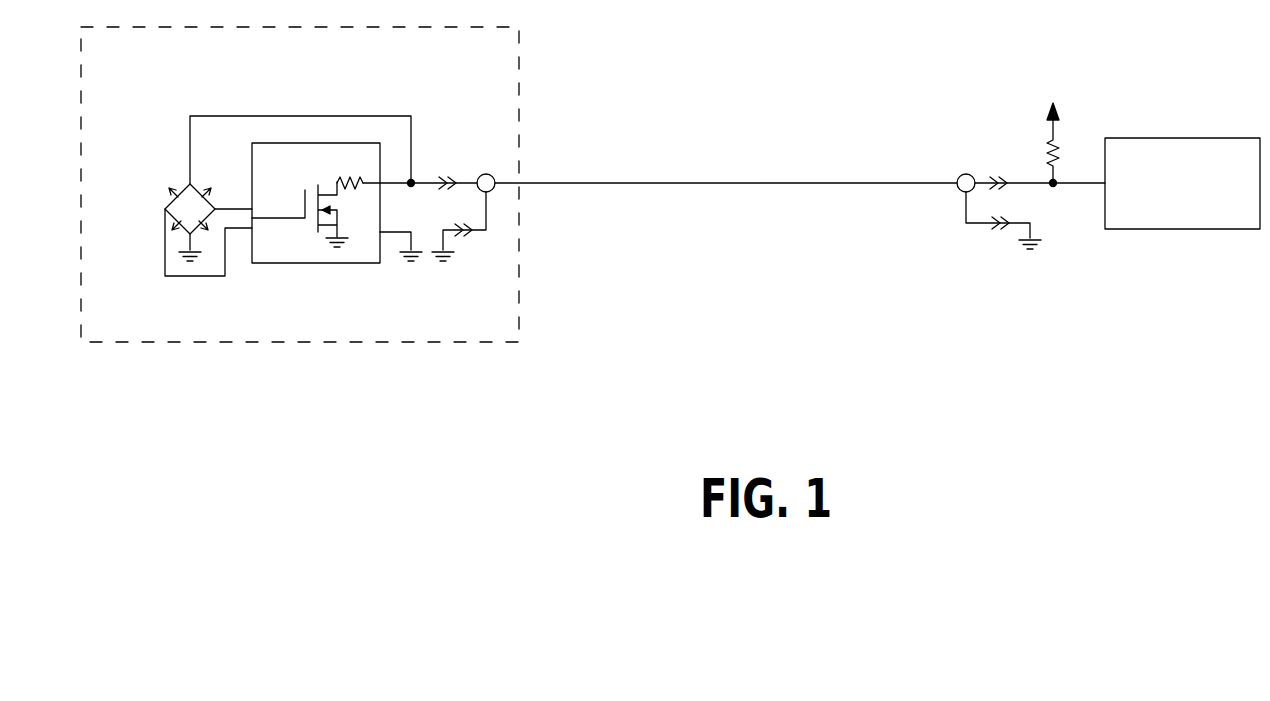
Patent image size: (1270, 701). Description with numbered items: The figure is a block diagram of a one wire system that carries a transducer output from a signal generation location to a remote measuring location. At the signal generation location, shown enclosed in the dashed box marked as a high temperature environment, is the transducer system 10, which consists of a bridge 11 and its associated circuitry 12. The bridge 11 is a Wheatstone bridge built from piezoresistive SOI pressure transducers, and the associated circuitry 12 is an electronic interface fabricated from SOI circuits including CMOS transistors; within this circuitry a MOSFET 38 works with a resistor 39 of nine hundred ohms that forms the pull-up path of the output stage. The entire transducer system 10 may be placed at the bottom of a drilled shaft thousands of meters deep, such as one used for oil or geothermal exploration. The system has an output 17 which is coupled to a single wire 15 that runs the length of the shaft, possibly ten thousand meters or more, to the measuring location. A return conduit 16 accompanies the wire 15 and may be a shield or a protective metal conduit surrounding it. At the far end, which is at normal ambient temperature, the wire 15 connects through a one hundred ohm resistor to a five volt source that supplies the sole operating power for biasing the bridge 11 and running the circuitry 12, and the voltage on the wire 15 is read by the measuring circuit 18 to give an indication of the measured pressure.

The transducer system 10 is at (468, 131).
The bridge 11 is at (174, 201).
The associated circuitry 12 is at (357, 173).
The wire 15 is at (552, 183).
The return conduit 16 is at (491, 193).
The output 17 is at (391, 186).
The measuring circuit 18 is at (1152, 228).
The MOSFET 38 is at (303, 195).
The resistor 39 is at (362, 178).